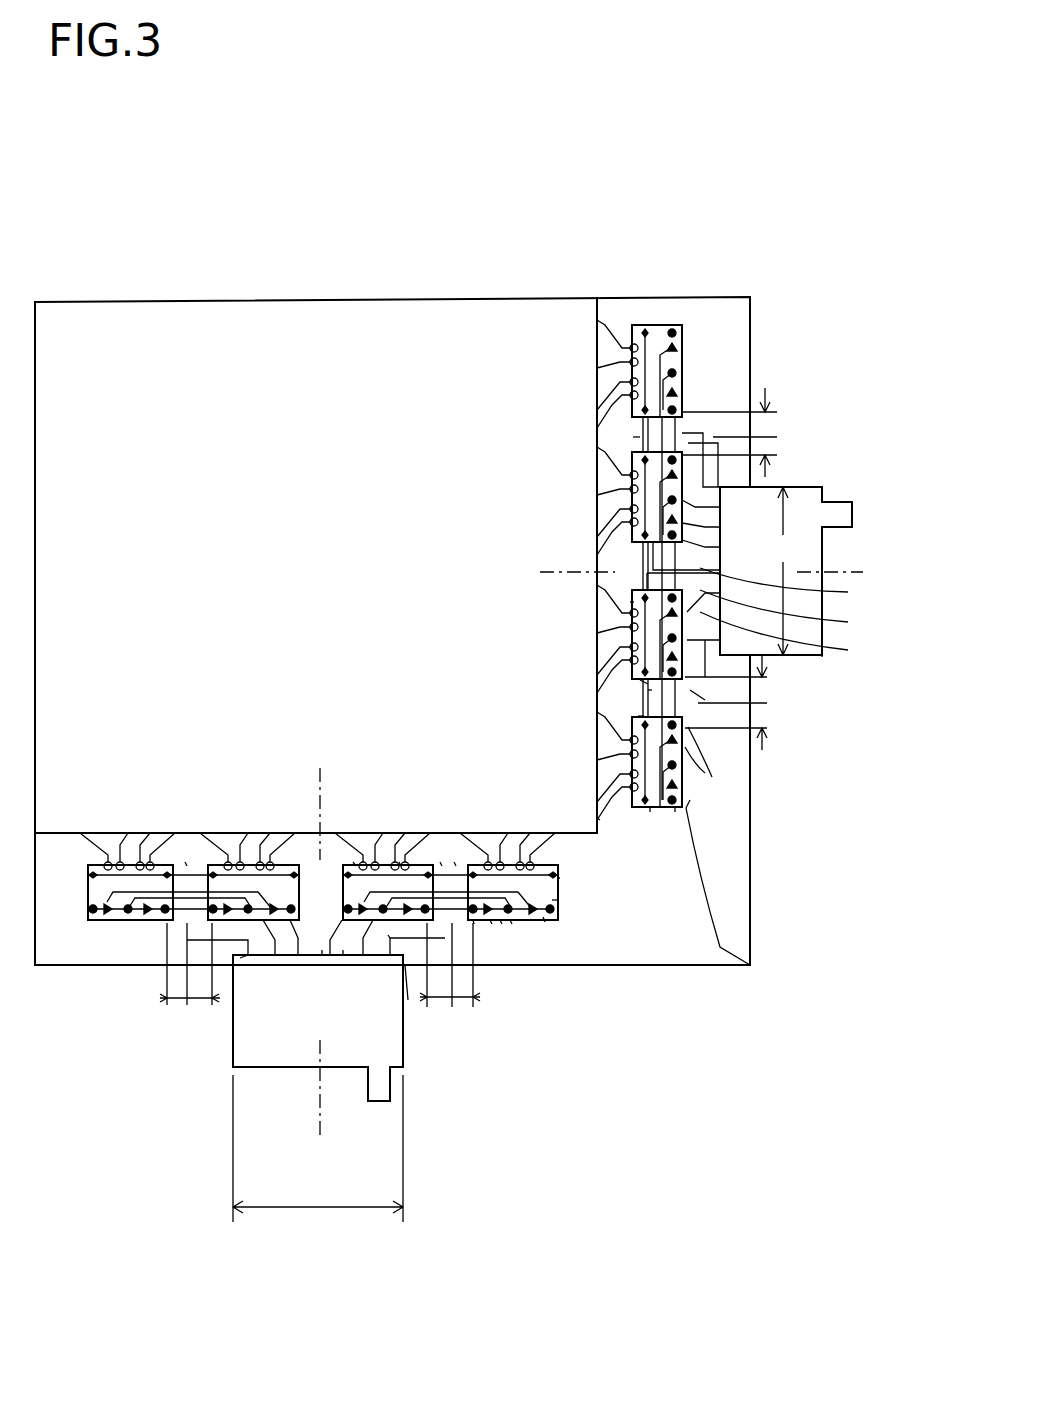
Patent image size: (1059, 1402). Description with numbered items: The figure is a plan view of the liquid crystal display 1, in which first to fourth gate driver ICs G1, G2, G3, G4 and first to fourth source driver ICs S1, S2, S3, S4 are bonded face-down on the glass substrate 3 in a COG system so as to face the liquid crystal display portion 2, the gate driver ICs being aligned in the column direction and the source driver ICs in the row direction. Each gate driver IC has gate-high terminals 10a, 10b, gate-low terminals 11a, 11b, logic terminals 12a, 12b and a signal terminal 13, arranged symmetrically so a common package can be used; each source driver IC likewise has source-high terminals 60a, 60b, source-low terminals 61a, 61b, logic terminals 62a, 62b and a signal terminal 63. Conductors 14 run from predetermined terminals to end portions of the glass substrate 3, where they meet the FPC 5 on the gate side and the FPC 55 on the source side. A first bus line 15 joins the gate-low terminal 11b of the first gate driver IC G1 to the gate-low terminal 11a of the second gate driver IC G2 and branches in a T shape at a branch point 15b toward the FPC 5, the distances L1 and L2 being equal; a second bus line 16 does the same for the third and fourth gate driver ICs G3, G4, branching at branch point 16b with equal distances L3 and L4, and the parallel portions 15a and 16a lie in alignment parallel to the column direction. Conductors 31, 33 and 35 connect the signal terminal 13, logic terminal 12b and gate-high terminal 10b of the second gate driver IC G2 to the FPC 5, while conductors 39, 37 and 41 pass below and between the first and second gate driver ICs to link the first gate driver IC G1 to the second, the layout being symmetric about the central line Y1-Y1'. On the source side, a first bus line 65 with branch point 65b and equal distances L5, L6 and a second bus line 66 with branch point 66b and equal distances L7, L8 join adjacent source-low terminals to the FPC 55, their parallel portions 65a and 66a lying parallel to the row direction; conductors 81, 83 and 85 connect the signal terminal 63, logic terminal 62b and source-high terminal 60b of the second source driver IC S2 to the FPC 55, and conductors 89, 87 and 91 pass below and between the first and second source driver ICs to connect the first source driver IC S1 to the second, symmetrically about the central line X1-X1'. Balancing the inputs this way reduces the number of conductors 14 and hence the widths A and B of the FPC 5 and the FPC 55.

The liquid crystal display 1 is at (704, 176).
The liquid crystal display portion 2 is at (213, 320).
The glass substrate 3 is at (688, 945).
The FPC 5 is at (822, 657).
The conductors 14 is at (760, 487).
The second bus line 16 is at (688, 433).
The parallel portion 16a is at (706, 443).
The branch point 16b is at (633, 437).
The first gate driver IC G1 is at (628, 766).
The second gate driver IC G2 is at (628, 637).
The third gate driver IC G3 is at (628, 496).
The fourth gate driver IC G4 is at (628, 380).
The first source driver IC S1 is at (517, 862).
The second source driver IC S2 is at (395, 862).
The third source driver IC S3 is at (248, 833).
The fourth source driver IC S4 is at (127, 833).
The FPC 55 is at (307, 1068).
The first bus line 65 is at (403, 942).
The parallel portion 65a is at (405, 965).
The branch point 65b is at (442, 862).
The second bus line 66 is at (187, 940).
The parallel portion 66a is at (240, 958).
The branch point 66b is at (187, 862).
The gate-high terminal 10a is at (598, 818).
The gate-high terminal 10b is at (640, 716).
The gate-low terminal 11a is at (675, 808).
The gate-low terminal 11b is at (712, 777).
The logic terminal 12a is at (750, 965).
The logic terminal 12b is at (685, 747).
The signal terminal 13 is at (686, 808).
The first bus line 15 is at (695, 693).
The parallel portion 15a is at (705, 700).
The branch point 15b is at (640, 680).
The conductor 31 is at (792, 642).
The conductor 33 is at (792, 616).
The conductor 35 is at (792, 590).
The conductor 37 is at (650, 808).
The conductor 39 is at (650, 690).
The conductor 41 is at (630, 602).
The source-high terminal 60a is at (558, 878).
The source-high terminal 60b is at (455, 862).
The source-low terminal 61a is at (543, 917).
The source-low terminal 61b is at (473, 920).
The logic terminal 62a is at (510, 920).
The logic terminal 62b is at (500, 920).
The signal terminal 63 is at (490, 920).
The conductor 81 is at (388, 935).
The conductor 83 is at (343, 950).
The conductor 85 is at (322, 950).
The conductor 87 is at (552, 900).
The conductor 89 is at (400, 862).
The conductor 91 is at (355, 862).
The distance L1 is at (746, 740).
The distance L2 is at (746, 679).
The distance L3 is at (746, 465).
The distance L4 is at (745, 410).
The distance L5 is at (469, 981).
The distance L6 is at (448, 981).
The distance L7 is at (207, 983).
The distance L8 is at (183, 983).
The width A is at (783, 571).
The width B is at (318, 1148).
The central line X1 is at (301, 791).
The central line X1' is at (345, 1091).
The central line Y1 is at (566, 555).
The central line Y1' is at (845, 555).